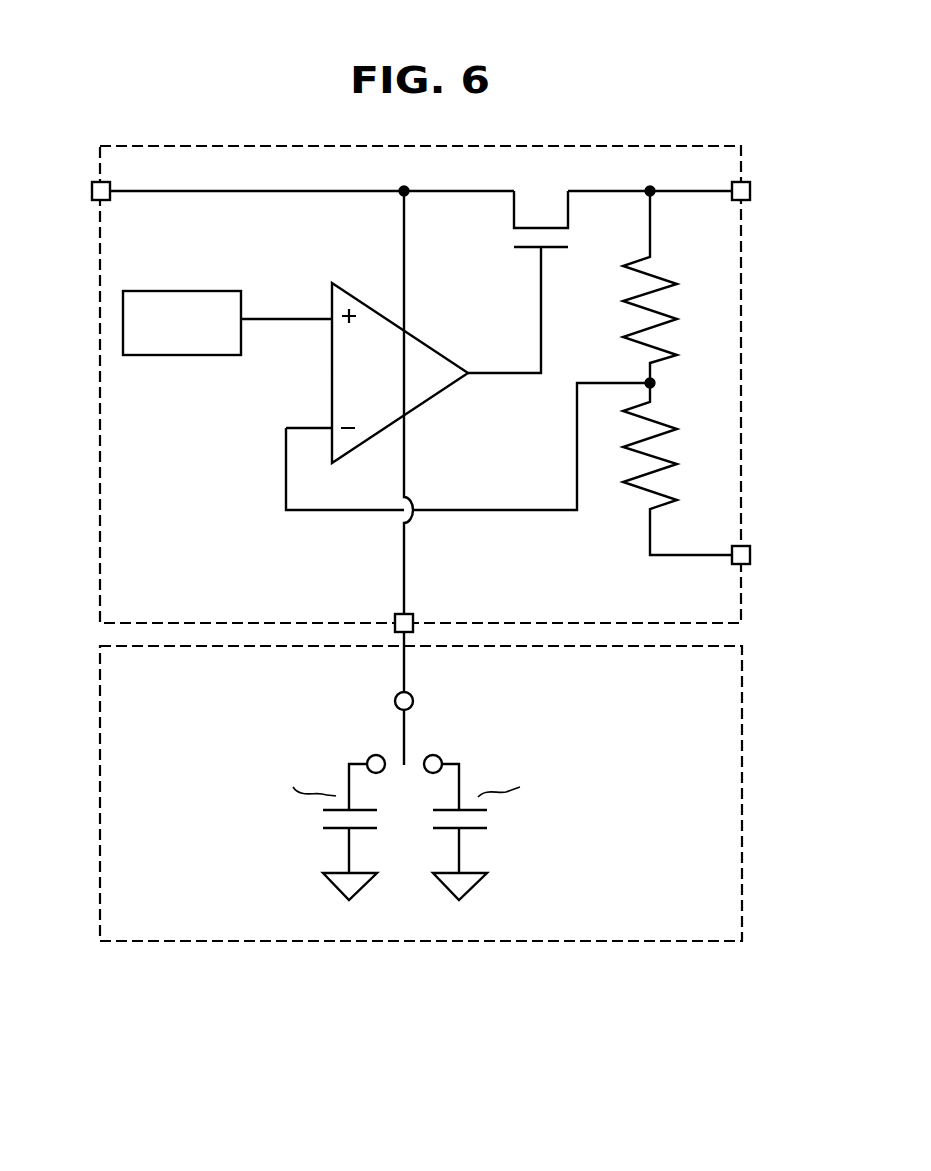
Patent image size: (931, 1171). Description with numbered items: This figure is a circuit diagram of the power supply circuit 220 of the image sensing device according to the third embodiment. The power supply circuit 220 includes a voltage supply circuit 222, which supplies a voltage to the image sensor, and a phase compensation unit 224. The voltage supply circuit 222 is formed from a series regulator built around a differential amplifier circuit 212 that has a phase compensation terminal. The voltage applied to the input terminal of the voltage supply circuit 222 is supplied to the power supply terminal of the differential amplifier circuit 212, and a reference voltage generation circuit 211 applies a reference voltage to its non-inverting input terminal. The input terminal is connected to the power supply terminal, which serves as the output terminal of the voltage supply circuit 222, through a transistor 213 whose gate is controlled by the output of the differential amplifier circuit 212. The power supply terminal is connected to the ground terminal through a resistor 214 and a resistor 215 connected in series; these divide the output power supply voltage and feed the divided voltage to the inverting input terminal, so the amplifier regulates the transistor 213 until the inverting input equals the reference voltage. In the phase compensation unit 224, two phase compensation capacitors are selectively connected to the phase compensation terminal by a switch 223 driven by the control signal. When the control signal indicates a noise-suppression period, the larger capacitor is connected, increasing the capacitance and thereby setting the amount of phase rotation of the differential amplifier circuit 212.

The power supply circuit 220 is at (510, 1017).
The voltage supply circuit 222 is at (742, 453).
The phase compensation unit 224 is at (742, 725).
The reference voltage generation circuit 211 is at (175, 291).
The differential amplifier circuit 212 is at (420, 338).
The transistor 213 is at (505, 220).
The resistor 214 is at (668, 264).
The resistor 215 is at (668, 414).
The switch 223 is at (418, 730).